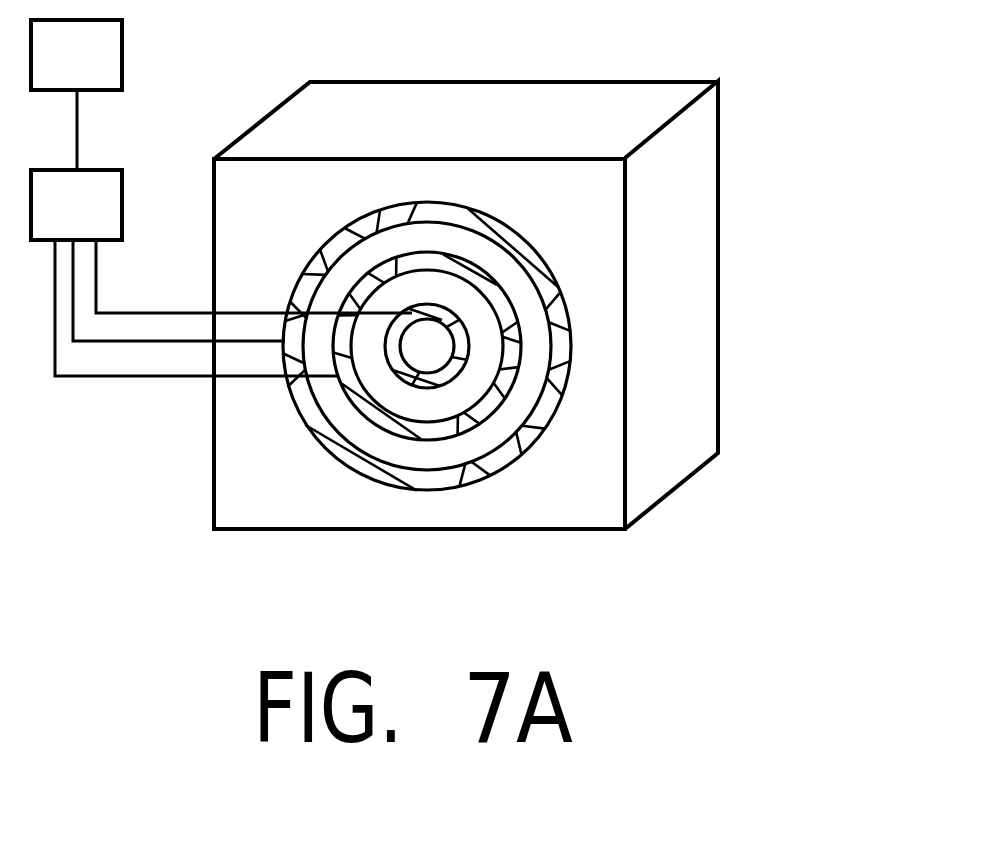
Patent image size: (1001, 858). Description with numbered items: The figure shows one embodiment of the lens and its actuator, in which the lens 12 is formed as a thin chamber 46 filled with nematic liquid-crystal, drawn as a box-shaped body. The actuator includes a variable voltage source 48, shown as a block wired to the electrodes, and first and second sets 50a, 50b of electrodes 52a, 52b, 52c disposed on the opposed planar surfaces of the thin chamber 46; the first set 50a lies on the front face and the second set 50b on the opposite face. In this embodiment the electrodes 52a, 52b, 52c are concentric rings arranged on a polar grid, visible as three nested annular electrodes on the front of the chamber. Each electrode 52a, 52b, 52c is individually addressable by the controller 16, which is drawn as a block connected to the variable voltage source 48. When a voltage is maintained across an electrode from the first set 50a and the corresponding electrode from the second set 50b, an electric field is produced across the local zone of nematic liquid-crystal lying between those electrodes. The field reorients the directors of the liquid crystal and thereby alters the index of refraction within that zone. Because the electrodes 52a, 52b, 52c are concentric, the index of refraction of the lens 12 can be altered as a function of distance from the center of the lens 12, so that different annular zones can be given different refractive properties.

The lens 12 is at (775, 68).
The controller 16 is at (96, 72).
The thin chamber 46 is at (495, 272).
The variable voltage source 48 is at (98, 222).
The first set of electrodes 50a is at (263, 472).
The second set of electrodes 50b is at (750, 283).
The electrode 52a is at (563, 392).
The electrode 52b is at (390, 432).
The electrode 52c is at (465, 352).